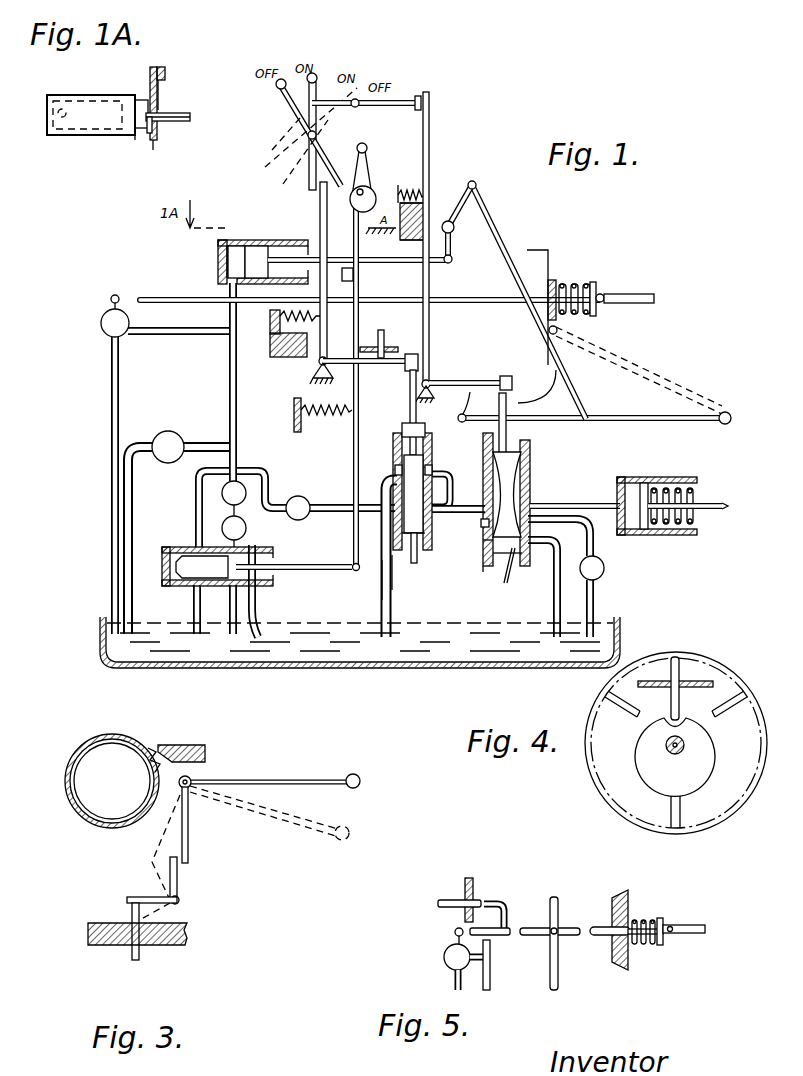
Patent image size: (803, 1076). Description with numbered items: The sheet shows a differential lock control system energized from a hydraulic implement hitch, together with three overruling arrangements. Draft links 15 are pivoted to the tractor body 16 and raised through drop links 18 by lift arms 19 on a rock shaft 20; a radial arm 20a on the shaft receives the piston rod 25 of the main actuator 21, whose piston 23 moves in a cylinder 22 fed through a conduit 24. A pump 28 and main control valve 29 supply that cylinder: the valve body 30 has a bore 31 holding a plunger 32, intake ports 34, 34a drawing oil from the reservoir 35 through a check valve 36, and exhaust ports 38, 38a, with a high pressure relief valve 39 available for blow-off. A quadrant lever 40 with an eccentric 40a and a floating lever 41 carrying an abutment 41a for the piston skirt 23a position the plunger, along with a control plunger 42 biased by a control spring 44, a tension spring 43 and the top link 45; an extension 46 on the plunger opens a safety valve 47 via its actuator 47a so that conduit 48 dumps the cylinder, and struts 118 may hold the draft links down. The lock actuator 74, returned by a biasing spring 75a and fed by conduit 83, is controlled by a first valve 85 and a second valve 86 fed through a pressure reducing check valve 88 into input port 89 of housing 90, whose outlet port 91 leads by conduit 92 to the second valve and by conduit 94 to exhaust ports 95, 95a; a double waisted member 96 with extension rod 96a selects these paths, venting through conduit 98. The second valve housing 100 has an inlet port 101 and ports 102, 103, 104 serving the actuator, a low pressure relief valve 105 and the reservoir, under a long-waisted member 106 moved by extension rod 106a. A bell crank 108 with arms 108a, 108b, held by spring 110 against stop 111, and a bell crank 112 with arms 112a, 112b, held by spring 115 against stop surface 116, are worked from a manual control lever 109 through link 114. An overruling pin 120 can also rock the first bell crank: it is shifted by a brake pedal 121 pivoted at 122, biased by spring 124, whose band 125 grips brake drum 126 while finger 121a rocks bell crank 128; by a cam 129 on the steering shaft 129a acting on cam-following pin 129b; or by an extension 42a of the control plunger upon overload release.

In FIG. 1, the draft links 15 is at (565, 420).
In FIG. 1, the tractor body 16 is at (542, 397).
In FIG. 1, the drop links 18 is at (500, 234).
In FIG. 1, the lift arms 19 is at (459, 208).
In FIG. 1, the rock shaft 20 is at (455, 228).
In FIG. 1, the radial arm 20a is at (453, 258).
In FIG. 1A, the main actuator 21 is at (69, 91).
In FIG. 1, the main actuator 21 is at (238, 232).
In FIG. 1A, the cylinder 22 is at (72, 137).
In FIG. 1, the cylinder 22 is at (218, 268).
In FIG. 1A, the piston 23 is at (142, 137).
In FIG. 1, the piston 23 is at (252, 272).
In FIG. 1A, the skirt 23a is at (160, 127).
In FIG. 1, the skirt 23a is at (268, 268).
In FIG. 1A, the conduit 24 is at (56, 116).
In FIG. 1, the conduit 24 is at (228, 397).
In FIG. 5, the conduit 24 is at (492, 982).
In FIG. 1A, the piston rod 25 is at (192, 114).
In FIG. 1, the piston rod 25 is at (378, 257).
In FIG. 1, the pump 28 is at (247, 529).
In FIG. 1, the main control valve 29 is at (213, 593).
In FIG. 1, the body 30 is at (172, 548).
In FIG. 1, the cylindrical bore 31 is at (254, 584).
In FIG. 1, the valve plunger 32 is at (202, 567).
In FIG. 1, the pump inlet port 34 is at (264, 560).
In FIG. 1, the pump inlet port 34a is at (262, 630).
In FIG. 1, the reservoir 35 is at (100, 646).
In FIG. 1, the check valve 36 is at (245, 492).
In FIG. 1, the exhaust port 38 is at (200, 545).
In FIG. 1, the exhaust port 38a is at (193, 590).
In FIG. 1, the high pressure relief valve 39 is at (168, 431).
In FIG. 1, the quadrant lever 40 is at (366, 146).
In FIG. 1, the eccentric 40a is at (368, 185).
In FIG. 1A, the floating lever 41 is at (166, 72).
In FIG. 1, the floating lever 41 is at (356, 442).
In FIG. 5, the floating lever 41 is at (559, 906).
In FIG. 1A, the abutment 41a is at (160, 95).
In FIG. 1, the abutment 41a is at (353, 275).
In FIG. 1, the control plunger 42 is at (485, 297).
In FIG. 5, the control plunger 42 is at (592, 925).
In FIG. 5, the extension 42a is at (490, 901).
In FIG. 1, the tension spring 43 is at (298, 428).
In FIG. 1, the control spring 44 is at (563, 286).
In FIG. 5, the control spring 44 is at (646, 942).
In FIG. 1, the control link 45 is at (631, 295).
In FIG. 5, the control link 45 is at (688, 935).
In FIG. 1, the extension 46 is at (216, 303).
In FIG. 5, the extension 46 is at (529, 936).
In FIG. 1, the safety valve 47 is at (101, 328).
In FIG. 5, the safety valve 47 is at (444, 959).
In FIG. 1, the actuator 47a is at (122, 285).
In FIG. 5, the actuator 47a is at (455, 933).
In FIG. 1, the conduit 48 is at (110, 405).
In FIG. 5, the conduit 48 is at (455, 981).
In FIG. 1, the hydraulic clutch actuator 74 is at (645, 477).
In FIG. 1, the biasing spring 75a is at (694, 497).
In FIG. 1, the conduit 83 is at (588, 503).
In FIG. 1, the first control valve 85 is at (386, 447).
In FIG. 1, the second control valve 86 is at (545, 476).
In FIG. 1, the pressure reducing check valve 88 is at (306, 517).
In FIG. 1, the input port 89 is at (396, 548).
In FIG. 1, the housing 90 is at (395, 484).
In FIG. 1, the outlet port 91 is at (456, 507).
In FIG. 1, the conduit 92 is at (479, 546).
In FIG. 1, the conduit 94 is at (462, 477).
In FIG. 1, the exhaust port 95 is at (432, 468).
In FIG. 1, the exhaust port 95a is at (397, 467).
In FIG. 1, the cylindrical member 96 is at (414, 540).
In FIG. 1, the extension rod 96a is at (414, 418).
In FIG. 1, the conduit 98 is at (388, 594).
In FIG. 1, the housing 100 is at (484, 572).
In FIG. 1, the inlet port 101 is at (485, 542).
In FIG. 1, the port 102 is at (538, 508).
In FIG. 1, the port 103 is at (552, 533).
In FIG. 1, the port 104 is at (549, 563).
In FIG. 1, the low pressure relief valve 105 is at (605, 570).
In FIG. 1, the cylindrical valve member 106 is at (505, 583).
In FIG. 1, the extension rod 106a is at (507, 411).
In FIG. 1, the bell crank 108 is at (342, 378).
In FIG. 1, the arm 108a is at (362, 366).
In FIG. 1A, the arm 108b is at (157, 142).
In FIG. 1, the arm 108b is at (319, 225).
In FIG. 1, the manual control lever 109 is at (316, 82).
In FIG. 1, the biasing spring 110 is at (290, 312).
In FIG. 1, the stop 111 is at (293, 341).
In FIG. 1, the bell crank 112 is at (453, 381).
In FIG. 1, the arm 112a is at (475, 402).
In FIG. 1, the arm 112b is at (430, 134).
In FIG. 1, the link 114 is at (419, 97).
In FIG. 1, the biasing spring 115 is at (410, 192).
In FIG. 1, the stop surface 116 is at (412, 240).
In FIG. 1, the struts 118 is at (640, 356).
In FIG. 1, the overruling pin 120 is at (384, 345).
In FIG. 3, the overruling pin 120 is at (140, 958).
In FIG. 5, the overruling pin 120 is at (449, 900).
In FIG. 3, the brake pedal 121 is at (285, 780).
In FIG. 3, the finger 121a is at (190, 828).
In FIG. 3, the pivot 122 is at (192, 780).
In FIG. 3, the spring 124 is at (165, 752).
In FIG. 3, the brake band 125 is at (137, 738).
In FIG. 3, the brake drum 126 is at (100, 810).
In FIG. 3, the bell crank 128 is at (180, 882).
In FIG. 4, the cam 129 is at (702, 740).
In FIG. 4, the shaft 129a is at (682, 750).
In FIG. 4, the cam-following pin 129b is at (681, 677).